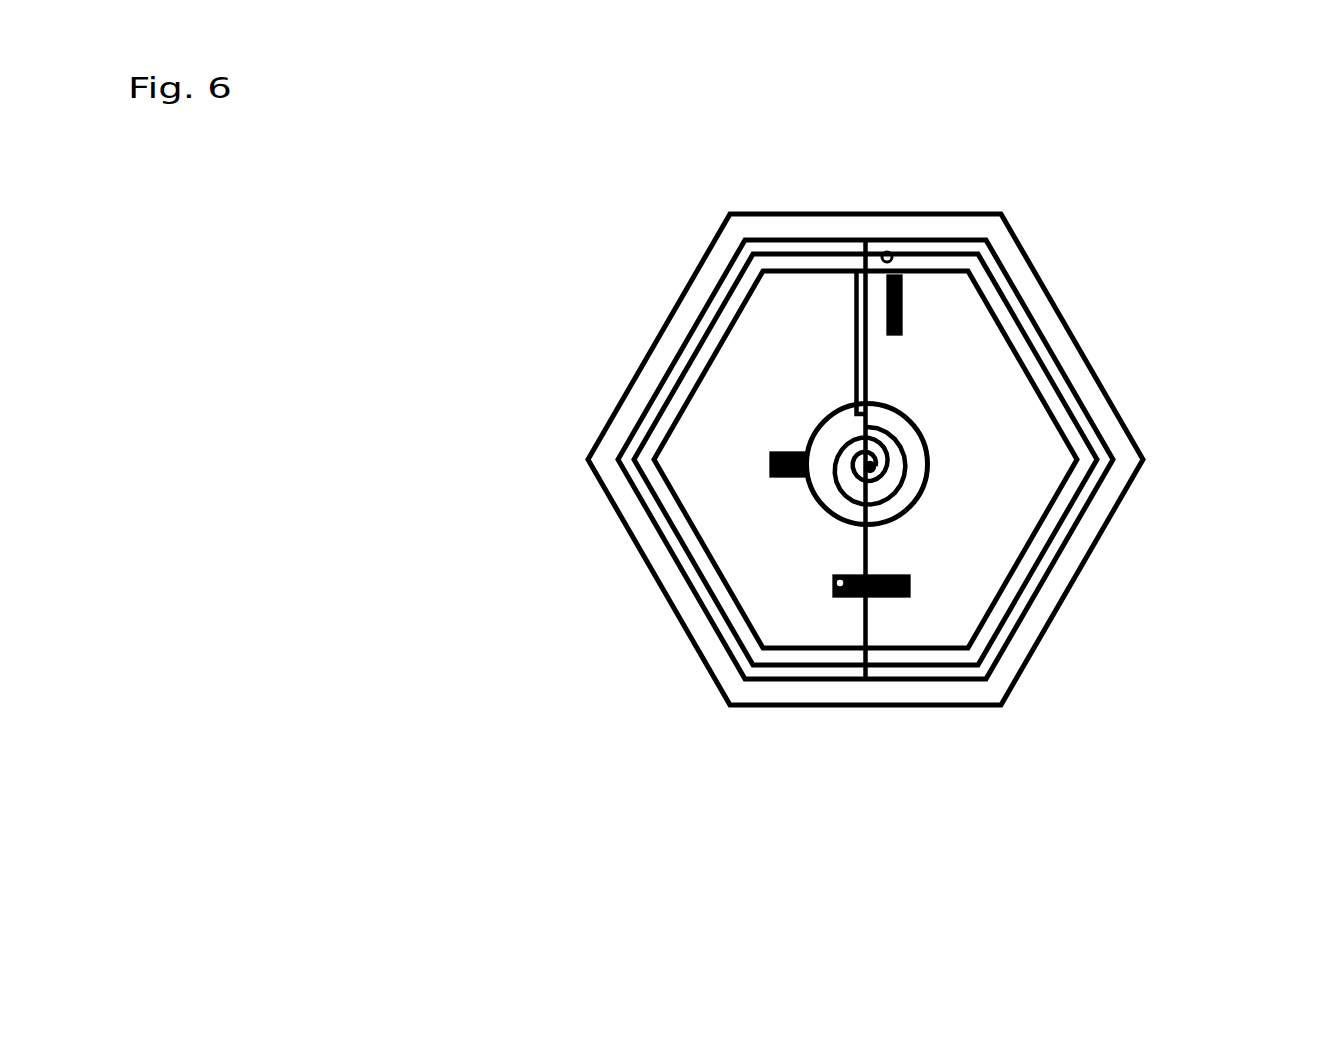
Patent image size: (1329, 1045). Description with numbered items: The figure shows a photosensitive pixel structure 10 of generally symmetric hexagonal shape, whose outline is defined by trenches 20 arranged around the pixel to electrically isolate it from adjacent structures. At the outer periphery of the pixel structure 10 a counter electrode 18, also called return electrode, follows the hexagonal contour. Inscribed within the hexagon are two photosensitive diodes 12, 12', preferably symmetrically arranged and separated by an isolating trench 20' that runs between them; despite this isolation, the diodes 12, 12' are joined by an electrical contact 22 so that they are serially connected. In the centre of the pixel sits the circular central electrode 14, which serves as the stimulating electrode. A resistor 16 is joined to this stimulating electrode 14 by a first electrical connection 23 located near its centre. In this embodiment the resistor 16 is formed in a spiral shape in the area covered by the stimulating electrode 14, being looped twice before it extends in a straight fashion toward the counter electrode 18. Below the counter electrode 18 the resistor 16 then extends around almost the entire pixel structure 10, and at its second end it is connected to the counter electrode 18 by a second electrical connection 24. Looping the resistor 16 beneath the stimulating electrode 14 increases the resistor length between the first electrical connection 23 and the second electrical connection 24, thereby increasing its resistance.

The photosensitive pixel structure 10 is at (548, 575).
The photosensitive diode 12 is at (865, 376).
The photosensitive diode 12' is at (896, 482).
The central electrode 14 is at (900, 418).
The resistor 16 is at (850, 383).
The counter electrode 18 is at (713, 623).
The trench 20 is at (860, 393).
The isolating trench 20' is at (956, 513).
The electrical contact 22 is at (838, 582).
The first electrical connection 23 is at (872, 467).
The second electrical connection 24 is at (891, 252).